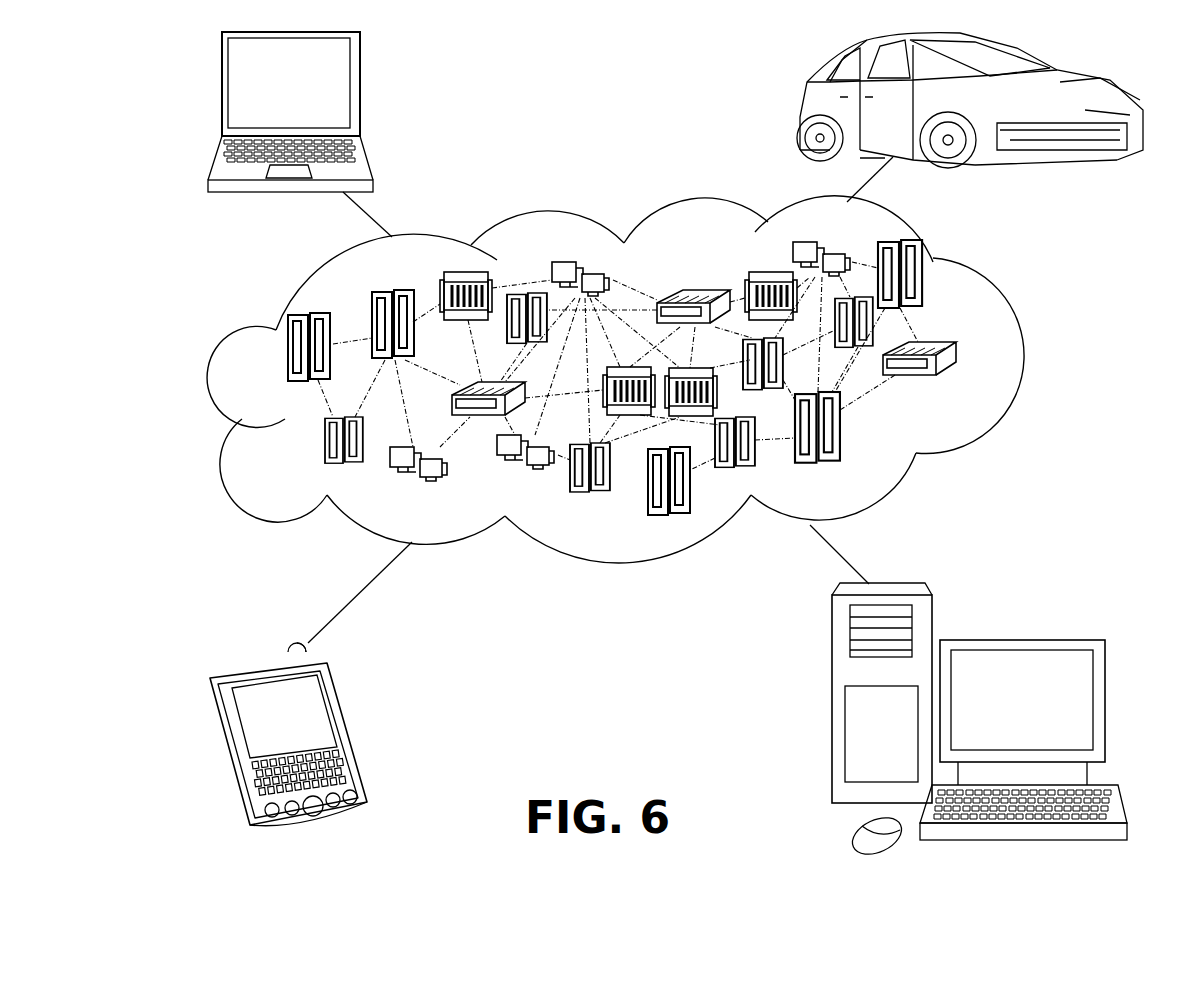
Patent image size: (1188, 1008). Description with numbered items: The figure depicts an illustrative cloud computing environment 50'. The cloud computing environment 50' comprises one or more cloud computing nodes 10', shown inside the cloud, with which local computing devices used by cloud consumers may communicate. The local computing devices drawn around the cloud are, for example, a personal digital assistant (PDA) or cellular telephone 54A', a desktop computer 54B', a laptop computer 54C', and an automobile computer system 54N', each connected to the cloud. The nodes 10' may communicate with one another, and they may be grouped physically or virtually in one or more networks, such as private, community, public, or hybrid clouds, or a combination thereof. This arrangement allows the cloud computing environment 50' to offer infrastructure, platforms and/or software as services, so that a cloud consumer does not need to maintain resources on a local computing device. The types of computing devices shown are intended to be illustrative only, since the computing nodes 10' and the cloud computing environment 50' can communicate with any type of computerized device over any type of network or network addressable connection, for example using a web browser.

The personal digital assistant (PDA) or cellular telephone 54A' is at (321, 734).
The desktop computer 54B' is at (979, 722).
The laptop computer 54C' is at (325, 112).
The automobile computer system 54N' is at (932, 100).
The cloud computing environment 50' is at (647, 379).
The cloud computing node 10' is at (1016, 408).